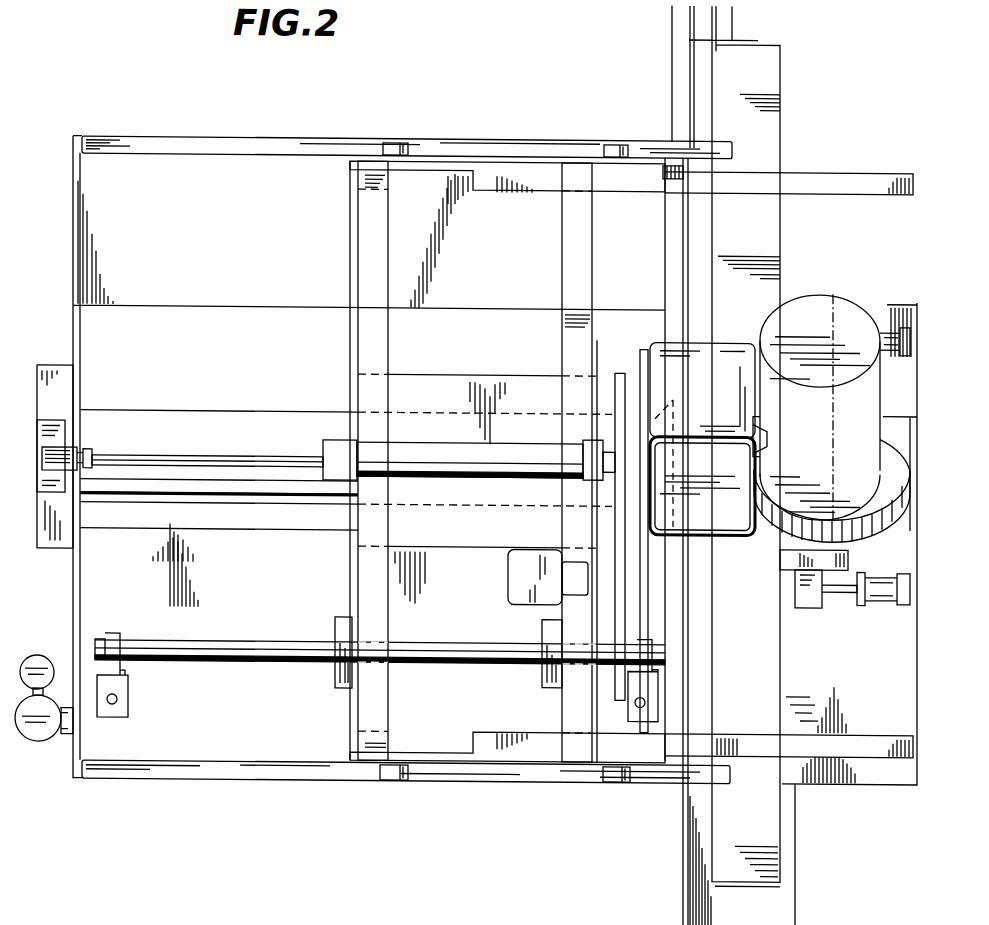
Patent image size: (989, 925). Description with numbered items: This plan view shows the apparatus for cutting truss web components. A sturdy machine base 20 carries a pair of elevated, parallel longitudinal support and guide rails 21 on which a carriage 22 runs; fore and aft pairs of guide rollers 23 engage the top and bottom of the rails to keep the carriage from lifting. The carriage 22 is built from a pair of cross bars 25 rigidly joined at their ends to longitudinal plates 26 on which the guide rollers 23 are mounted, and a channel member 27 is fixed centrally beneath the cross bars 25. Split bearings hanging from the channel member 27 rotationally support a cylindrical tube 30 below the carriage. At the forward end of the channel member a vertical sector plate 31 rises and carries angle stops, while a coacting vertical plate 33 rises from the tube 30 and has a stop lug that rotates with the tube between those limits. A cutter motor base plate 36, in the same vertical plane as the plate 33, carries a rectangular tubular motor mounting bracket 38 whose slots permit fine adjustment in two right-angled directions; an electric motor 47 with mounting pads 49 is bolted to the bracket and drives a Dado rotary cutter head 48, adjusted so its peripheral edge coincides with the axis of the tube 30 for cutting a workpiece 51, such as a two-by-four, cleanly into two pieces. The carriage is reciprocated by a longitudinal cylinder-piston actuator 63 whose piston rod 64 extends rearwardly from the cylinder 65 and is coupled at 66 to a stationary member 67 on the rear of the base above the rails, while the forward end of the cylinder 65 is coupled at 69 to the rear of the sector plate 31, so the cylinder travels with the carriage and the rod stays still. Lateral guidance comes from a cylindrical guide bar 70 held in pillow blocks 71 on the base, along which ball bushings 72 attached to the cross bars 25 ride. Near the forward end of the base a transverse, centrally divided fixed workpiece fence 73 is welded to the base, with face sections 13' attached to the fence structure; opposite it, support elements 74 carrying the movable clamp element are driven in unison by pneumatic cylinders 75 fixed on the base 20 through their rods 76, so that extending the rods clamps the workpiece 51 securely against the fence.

The column housing 13' is at (734, 446).
The machine base 20 is at (192, 224).
The longitudinal support and guide rails 21 is at (290, 135).
The carriage 22 is at (474, 464).
The guide rollers 23 is at (398, 139).
The cross bars 25 is at (362, 274).
The longitudinal plates 26 is at (472, 163).
The channel member 27 is at (470, 372).
The cylindrical tube 30 is at (328, 410).
The sector plate 31 is at (597, 558).
The vertical plate 33 is at (645, 597).
The cutter motor base plate 36 is at (640, 352).
The tubular motor mounting bracket 38 is at (712, 384).
The electric motor 47 is at (839, 427).
The Dado rotary cutter head 48 is at (862, 535).
The mounting pads 49 is at (762, 438).
The workpiece 51 is at (770, 677).
The cylinder-piston actuator 63 is at (353, 467).
The piston rod 64 is at (237, 455).
The cylinder 65 is at (463, 452).
The coupling 66 is at (60, 447).
The stationary member 67 is at (62, 370).
The coupling 69 is at (615, 461).
The guide bar 70 is at (255, 660).
The pillow blocks 71 is at (115, 645).
The ball bushings 72 is at (336, 700).
The workpiece fence 73 is at (688, 248).
The support elements 74 is at (782, 563).
The pneumatic cylinders 75 is at (877, 603).
The rods 76 is at (833, 597).